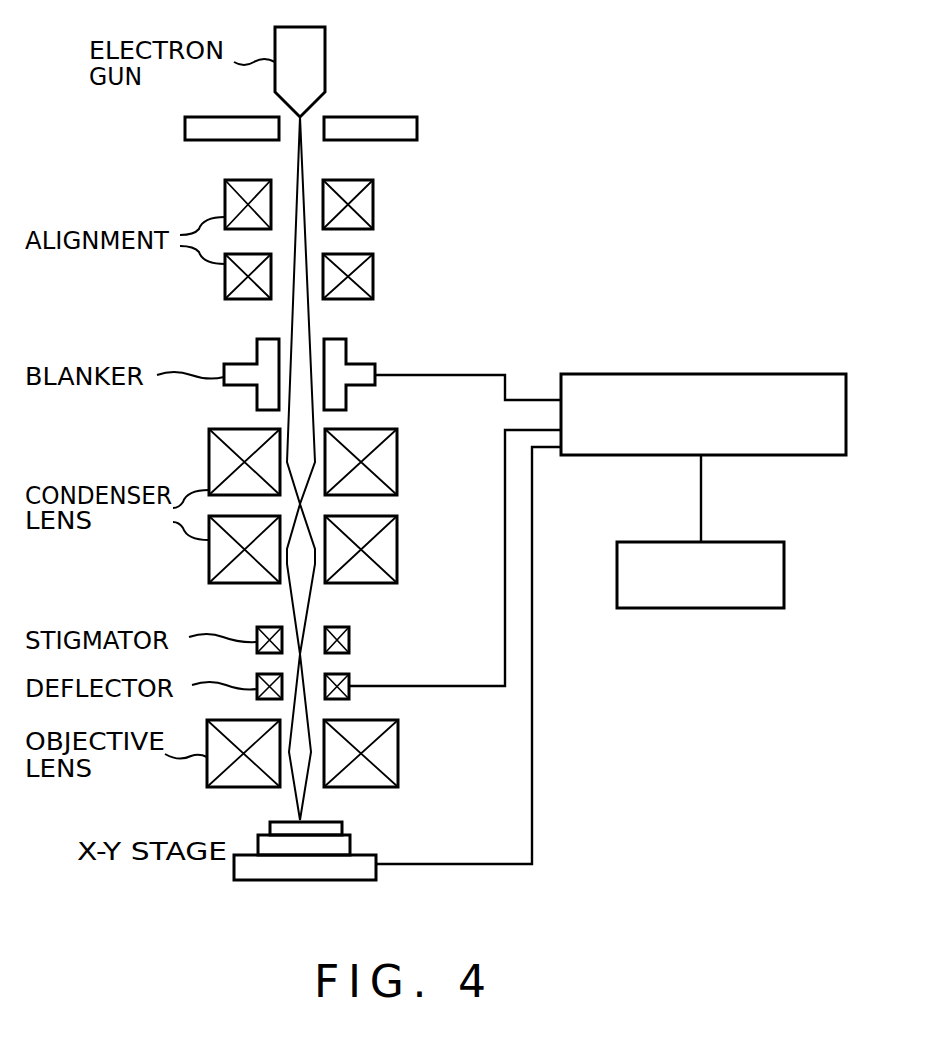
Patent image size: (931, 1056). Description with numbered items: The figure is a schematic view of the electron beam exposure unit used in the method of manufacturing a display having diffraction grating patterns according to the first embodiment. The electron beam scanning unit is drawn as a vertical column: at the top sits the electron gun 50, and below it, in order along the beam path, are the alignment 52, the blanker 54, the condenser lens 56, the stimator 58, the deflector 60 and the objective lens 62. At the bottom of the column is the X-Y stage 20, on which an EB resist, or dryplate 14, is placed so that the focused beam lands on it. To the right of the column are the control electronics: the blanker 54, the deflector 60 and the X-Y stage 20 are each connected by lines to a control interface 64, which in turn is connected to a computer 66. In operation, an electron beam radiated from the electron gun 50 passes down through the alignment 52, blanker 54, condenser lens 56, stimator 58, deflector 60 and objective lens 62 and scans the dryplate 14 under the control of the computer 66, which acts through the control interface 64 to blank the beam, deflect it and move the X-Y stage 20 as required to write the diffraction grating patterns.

The electron gun 50 is at (323, 50).
The alignment 52 is at (371, 215).
The blanker 54 is at (373, 357).
The condenser lens 56 is at (395, 478).
The stimator 58 is at (347, 636).
The deflector 60 is at (352, 676).
The objective lens 62 is at (396, 745).
The EB resist (dryplate) 14 is at (335, 827).
The X-Y stage 20 is at (366, 871).
The control interface 64 is at (671, 372).
The computer 66 is at (767, 540).